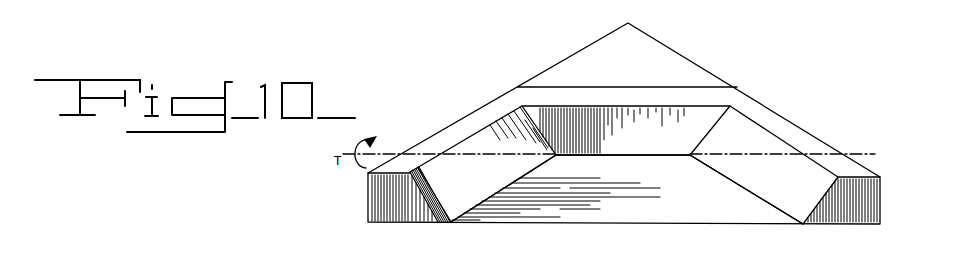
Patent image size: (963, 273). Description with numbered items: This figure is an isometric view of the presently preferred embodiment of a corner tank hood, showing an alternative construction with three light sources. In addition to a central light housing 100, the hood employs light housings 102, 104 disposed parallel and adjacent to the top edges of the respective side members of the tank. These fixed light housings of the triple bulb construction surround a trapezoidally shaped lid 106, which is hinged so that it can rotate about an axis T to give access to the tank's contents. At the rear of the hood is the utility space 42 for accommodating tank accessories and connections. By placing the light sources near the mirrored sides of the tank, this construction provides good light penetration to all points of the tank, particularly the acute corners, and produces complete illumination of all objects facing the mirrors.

The utility space 42 is at (688, 74).
The central light housing 100 is at (708, 107).
The light housing 102 is at (469, 207).
The light housing 104 is at (796, 203).
The trapezoidally shaped lid 106 is at (692, 208).